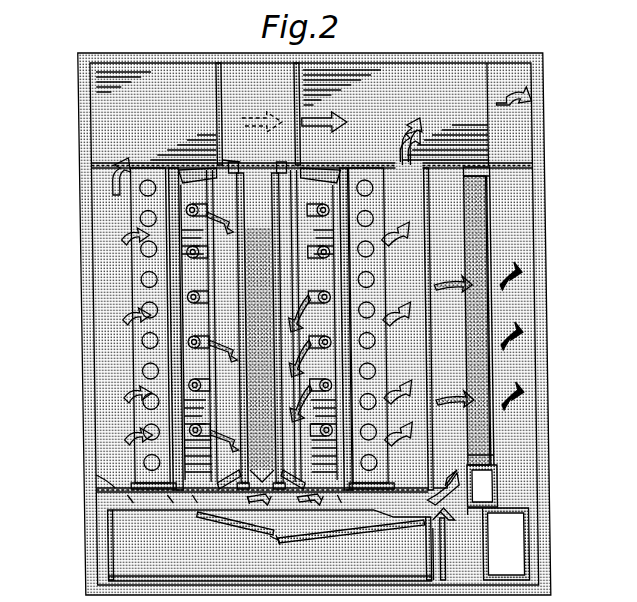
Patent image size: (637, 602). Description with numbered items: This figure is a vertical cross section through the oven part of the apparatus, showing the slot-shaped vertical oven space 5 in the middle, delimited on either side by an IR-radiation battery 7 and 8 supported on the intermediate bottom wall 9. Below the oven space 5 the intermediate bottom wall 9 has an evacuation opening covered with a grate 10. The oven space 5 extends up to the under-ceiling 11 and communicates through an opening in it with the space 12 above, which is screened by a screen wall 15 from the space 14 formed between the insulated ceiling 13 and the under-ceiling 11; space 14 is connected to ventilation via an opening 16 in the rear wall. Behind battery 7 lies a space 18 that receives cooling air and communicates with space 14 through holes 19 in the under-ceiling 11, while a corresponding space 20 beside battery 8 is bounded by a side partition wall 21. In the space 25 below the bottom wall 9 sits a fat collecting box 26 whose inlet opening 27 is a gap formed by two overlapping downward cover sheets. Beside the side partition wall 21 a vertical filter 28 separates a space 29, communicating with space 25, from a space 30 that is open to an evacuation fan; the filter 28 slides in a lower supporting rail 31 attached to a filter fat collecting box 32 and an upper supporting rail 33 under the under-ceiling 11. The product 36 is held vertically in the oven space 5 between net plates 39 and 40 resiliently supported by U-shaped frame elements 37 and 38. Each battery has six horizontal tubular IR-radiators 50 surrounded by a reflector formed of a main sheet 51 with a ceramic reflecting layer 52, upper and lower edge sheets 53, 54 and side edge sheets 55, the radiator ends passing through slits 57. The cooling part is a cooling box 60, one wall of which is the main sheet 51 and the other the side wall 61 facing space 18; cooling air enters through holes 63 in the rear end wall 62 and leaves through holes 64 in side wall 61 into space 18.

The oven space 5 is at (247, 205).
The IR-radiation battery 7 is at (201, 180).
The IR-radiation battery 8 is at (322, 186).
The intermediate bottom wall 9 is at (108, 484).
The grate 10 is at (185, 493).
The under-ceiling 11 is at (440, 163).
The space 12 is at (268, 100).
The insulated ceiling 13 is at (424, 53).
The space 14 is at (160, 100).
The screen wall 15 is at (214, 68).
The opening 16 is at (517, 138).
The space 18 is at (106, 378).
The holes 19 is at (108, 182).
The space 20 is at (390, 284).
The side partition wall 21 is at (428, 250).
The space 25 is at (368, 507).
The fat collecting box 26 is at (100, 555).
The inlet opening 27 is at (262, 542).
The filter 28 is at (476, 450).
The space 29 is at (456, 367).
The space 30 is at (494, 237).
The lower supporting rail 31 is at (490, 485).
The filter fat collecting box 32 is at (522, 555).
The upper supporting rail 33 is at (487, 176).
The product 36 is at (270, 290).
The frame element 37 is at (233, 160).
The frame element 38 is at (278, 160).
The net plate 39 is at (278, 203).
The net plate 40 is at (230, 215).
The IR-radiators 50 is at (203, 305).
The main sheet 51 is at (140, 392).
The reflecting layer 52 is at (150, 432).
The upper edge sheet 53 is at (186, 172).
The lower edge sheet 54 is at (214, 493).
The side edge sheet 55 is at (201, 374).
The slits 57 is at (202, 258).
The cooling box 60 is at (150, 357).
The side wall 61 is at (140, 300).
The rear end wall 62 is at (140, 283).
The holes 63 is at (138, 252).
The holes 64 is at (128, 200).